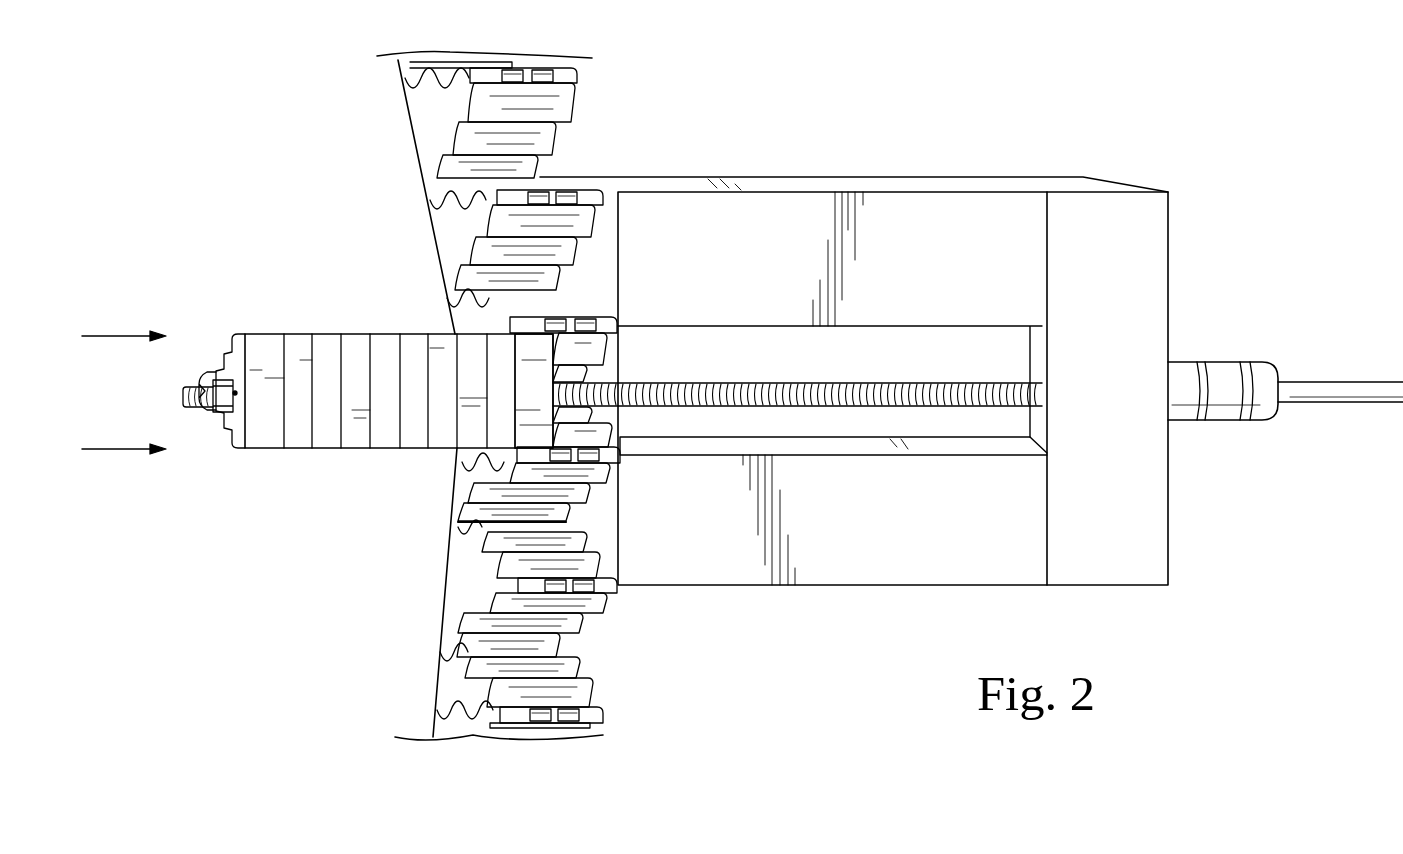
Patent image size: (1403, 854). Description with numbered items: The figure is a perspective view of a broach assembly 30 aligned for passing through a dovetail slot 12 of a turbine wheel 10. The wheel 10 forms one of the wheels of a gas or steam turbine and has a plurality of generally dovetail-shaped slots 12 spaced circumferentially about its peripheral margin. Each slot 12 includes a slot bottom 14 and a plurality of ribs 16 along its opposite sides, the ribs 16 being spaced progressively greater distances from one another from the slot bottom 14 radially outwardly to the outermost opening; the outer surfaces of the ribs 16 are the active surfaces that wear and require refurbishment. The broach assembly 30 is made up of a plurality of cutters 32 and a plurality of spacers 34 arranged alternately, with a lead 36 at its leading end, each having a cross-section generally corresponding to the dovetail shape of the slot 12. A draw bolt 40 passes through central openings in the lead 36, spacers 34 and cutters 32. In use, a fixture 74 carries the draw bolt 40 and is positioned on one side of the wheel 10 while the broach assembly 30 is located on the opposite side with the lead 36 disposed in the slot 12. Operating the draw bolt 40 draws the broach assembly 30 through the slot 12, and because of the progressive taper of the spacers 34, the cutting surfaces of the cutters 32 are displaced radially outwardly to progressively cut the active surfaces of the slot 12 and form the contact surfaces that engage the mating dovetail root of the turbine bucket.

The wheel 10 is at (418, 136).
The dovetail-shaped slot 12 is at (527, 133).
The slot bottom 14 is at (472, 513).
The ribs 16 is at (472, 525).
The broach assembly 30 is at (299, 282).
The cutters 32 is at (465, 348).
The spacers 34 is at (497, 342).
The lead 36 is at (543, 373).
The draw bolt 40 is at (828, 382).
The fixture 74 is at (820, 567).